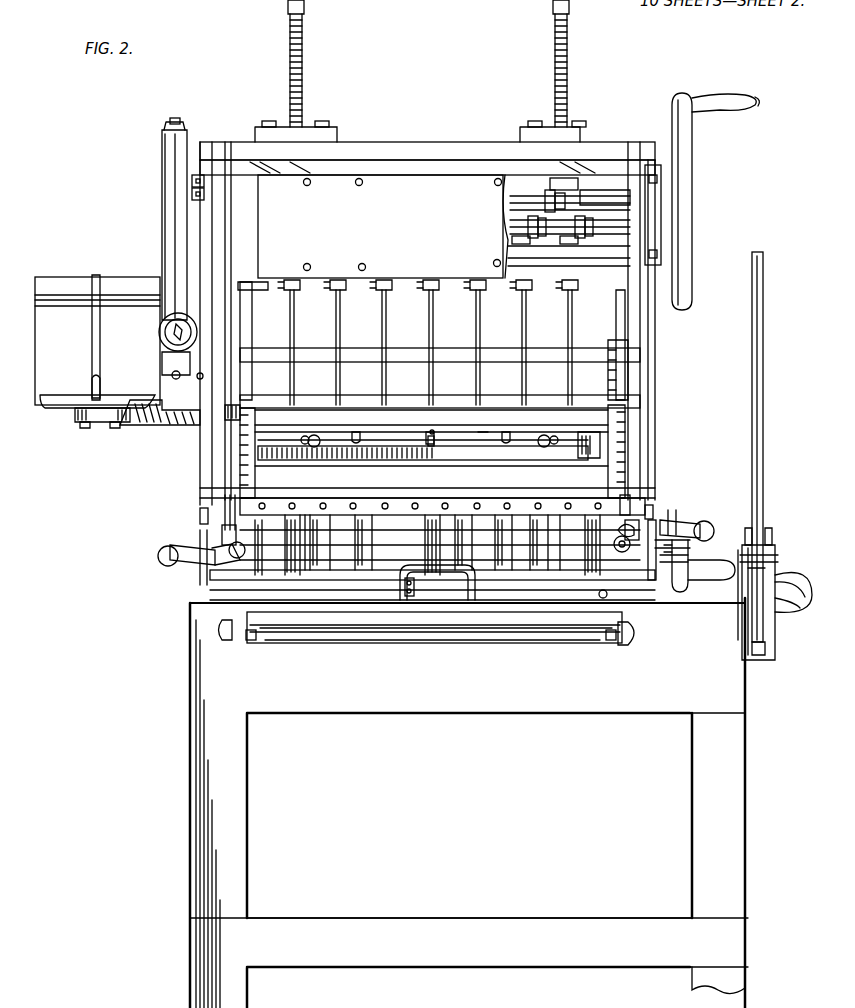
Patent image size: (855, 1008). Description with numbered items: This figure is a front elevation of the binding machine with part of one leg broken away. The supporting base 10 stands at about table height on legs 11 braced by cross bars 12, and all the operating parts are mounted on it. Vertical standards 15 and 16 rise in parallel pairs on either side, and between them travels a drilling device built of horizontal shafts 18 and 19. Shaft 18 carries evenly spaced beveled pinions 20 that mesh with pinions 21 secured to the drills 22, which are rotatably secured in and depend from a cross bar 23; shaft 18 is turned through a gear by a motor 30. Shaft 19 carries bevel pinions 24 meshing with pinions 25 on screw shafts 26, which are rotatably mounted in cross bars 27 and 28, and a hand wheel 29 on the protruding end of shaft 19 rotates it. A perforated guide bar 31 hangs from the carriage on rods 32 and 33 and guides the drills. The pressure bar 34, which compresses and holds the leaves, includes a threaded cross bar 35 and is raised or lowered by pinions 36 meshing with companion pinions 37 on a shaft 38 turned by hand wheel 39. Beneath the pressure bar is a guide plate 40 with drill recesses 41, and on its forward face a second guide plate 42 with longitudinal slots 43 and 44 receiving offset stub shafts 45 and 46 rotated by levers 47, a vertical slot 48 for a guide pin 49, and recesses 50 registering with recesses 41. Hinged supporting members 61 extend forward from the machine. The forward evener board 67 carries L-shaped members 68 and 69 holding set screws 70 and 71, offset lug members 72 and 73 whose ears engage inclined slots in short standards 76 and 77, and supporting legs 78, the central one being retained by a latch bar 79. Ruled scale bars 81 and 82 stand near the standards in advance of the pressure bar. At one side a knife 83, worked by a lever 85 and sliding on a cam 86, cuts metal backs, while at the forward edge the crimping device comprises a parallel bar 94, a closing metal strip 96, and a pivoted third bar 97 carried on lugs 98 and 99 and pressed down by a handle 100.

The supporting base 10 is at (469, 805).
The legs 11 is at (200, 803).
The cross bars 12 is at (527, 912).
The standards 15 is at (637, 330).
The standards 16 is at (217, 216).
The shaft 18 is at (615, 230).
The shaft 19 is at (585, 200).
The beveled pinions 20 is at (513, 226).
The pinions 21 is at (512, 243).
The drills 22 is at (334, 308).
The cross bar 23 is at (569, 259).
The bevel pinions 24 is at (512, 203).
The pinions 25 is at (568, 186).
The screw shafts 26 is at (306, 64).
The cross bar 27 is at (494, 182).
The cross bar 28 is at (449, 142).
The hand wheel 29 is at (693, 163).
The motor 30 is at (119, 351).
The guide bar 31 is at (313, 398).
The rod 32 is at (241, 308).
The rod 33 is at (618, 303).
The pressure bar 34 is at (592, 440).
The cross bar 35 is at (406, 352).
The pinion 36 is at (230, 535).
The pinions 37 is at (265, 565).
The shaft 38 is at (312, 547).
The hand wheel 39 is at (657, 524).
The guide plate 40 is at (537, 458).
The recesses 41 is at (335, 462).
The second guide plate 42 is at (483, 432).
The slot 43 is at (310, 436).
The slot 44 is at (560, 437).
The stub shaft 45 is at (318, 437).
The stub shaft 46 is at (546, 436).
The levers 47 is at (357, 434).
The vertical slot 48 is at (436, 436).
The pin 49 is at (428, 438).
The recesses 50 is at (425, 442).
The supporting members 61 is at (385, 548).
The forward evener board 67 is at (497, 506).
The L shaped member 68 is at (232, 505).
The L shaped member 69 is at (632, 498).
The set screw 70 is at (212, 556).
The set screw 71 is at (652, 552).
The offset lug member 72 is at (205, 517).
The offset lug member 73 is at (652, 515).
The short standard 76 is at (205, 535).
The short standard 77 is at (655, 540).
The supporting legs 78 is at (466, 512).
The latch bar 79 is at (432, 587).
The scale bar 81 is at (628, 394).
The scale bar 82 is at (245, 446).
The knife 83 is at (790, 583).
The lever 85 is at (765, 393).
The cam 86 is at (762, 620).
The bar 94 is at (434, 632).
The metal strip 96 is at (328, 645).
The third bar 97 is at (385, 628).
The lug 98 is at (252, 645).
The lug 99 is at (609, 642).
The handle 100 is at (472, 594).